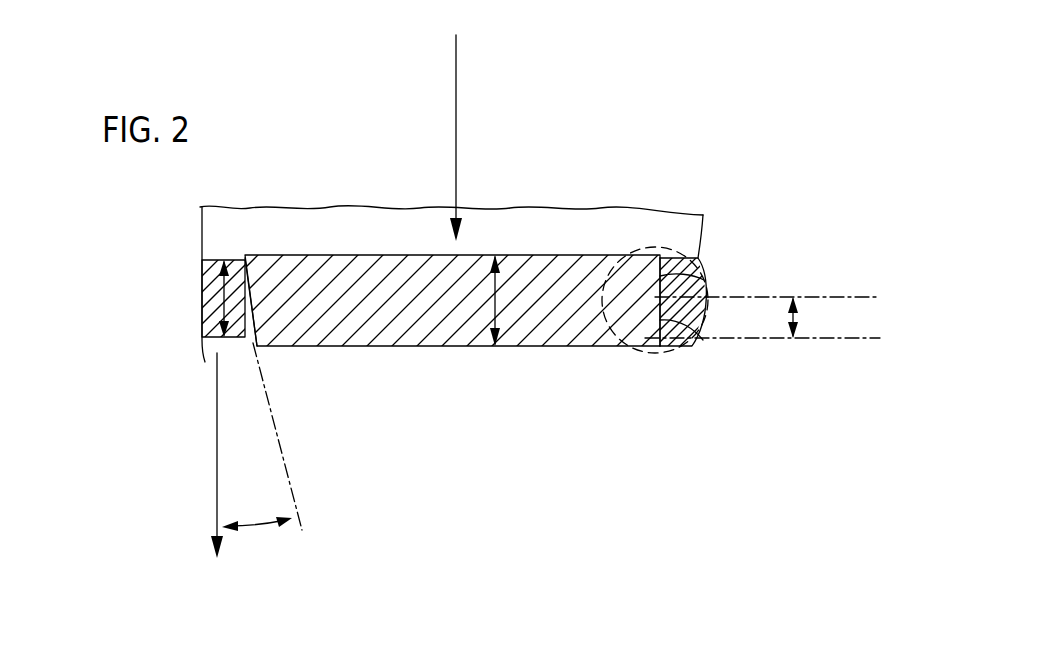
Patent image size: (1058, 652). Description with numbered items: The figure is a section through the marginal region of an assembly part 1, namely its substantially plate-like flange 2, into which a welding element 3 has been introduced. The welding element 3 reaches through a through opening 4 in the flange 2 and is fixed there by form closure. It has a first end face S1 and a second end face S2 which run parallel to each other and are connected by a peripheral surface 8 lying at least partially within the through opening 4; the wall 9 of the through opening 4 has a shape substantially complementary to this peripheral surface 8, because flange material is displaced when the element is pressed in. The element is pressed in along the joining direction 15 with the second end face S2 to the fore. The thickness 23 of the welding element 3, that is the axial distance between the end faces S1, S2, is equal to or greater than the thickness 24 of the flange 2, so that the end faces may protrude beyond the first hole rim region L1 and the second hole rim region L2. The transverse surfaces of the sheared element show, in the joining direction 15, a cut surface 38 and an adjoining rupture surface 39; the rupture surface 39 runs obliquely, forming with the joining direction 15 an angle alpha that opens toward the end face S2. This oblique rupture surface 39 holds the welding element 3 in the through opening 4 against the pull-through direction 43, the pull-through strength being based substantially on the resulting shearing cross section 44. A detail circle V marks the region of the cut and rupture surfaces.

The assembly part 1 is at (310, 216).
The flange 2 is at (200, 318).
The welding element 3 is at (578, 262).
The through opening 4 is at (250, 278).
The peripheral surface 8 is at (252, 345).
The wall of the through opening 9 is at (258, 300).
The joining direction 15 is at (217, 435).
The thickness of the welding element 23 is at (497, 300).
The thickness of the flange 24 is at (200, 290).
The cut surface 38 is at (700, 270).
The rupture surface 39 is at (690, 330).
The pull-through direction 43 is at (456, 100).
The shearing cross section 44 is at (797, 322).
The first end face S1 is at (533, 255).
The second end face S2 is at (360, 347).
The first hole rim region L1 is at (700, 258).
The second hole rim region L2 is at (693, 345).
The detail V is at (660, 350).
The angle α alpha is at (257, 511).